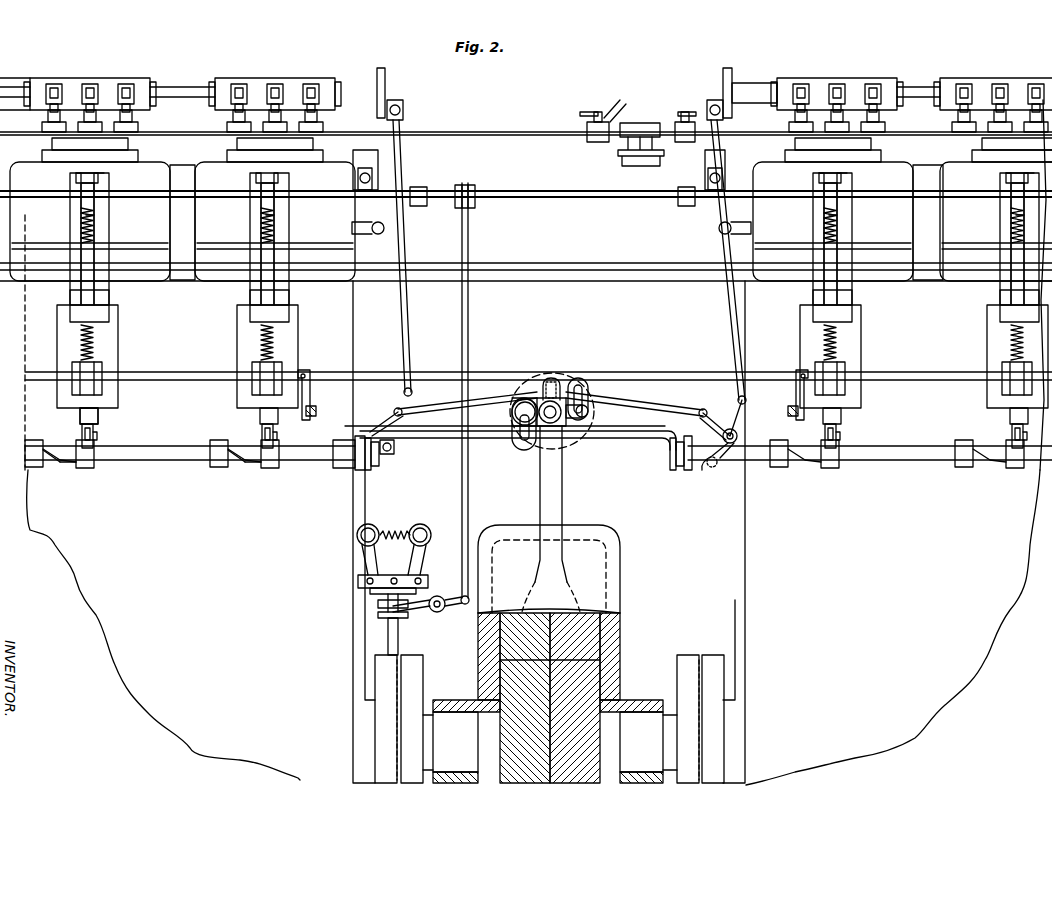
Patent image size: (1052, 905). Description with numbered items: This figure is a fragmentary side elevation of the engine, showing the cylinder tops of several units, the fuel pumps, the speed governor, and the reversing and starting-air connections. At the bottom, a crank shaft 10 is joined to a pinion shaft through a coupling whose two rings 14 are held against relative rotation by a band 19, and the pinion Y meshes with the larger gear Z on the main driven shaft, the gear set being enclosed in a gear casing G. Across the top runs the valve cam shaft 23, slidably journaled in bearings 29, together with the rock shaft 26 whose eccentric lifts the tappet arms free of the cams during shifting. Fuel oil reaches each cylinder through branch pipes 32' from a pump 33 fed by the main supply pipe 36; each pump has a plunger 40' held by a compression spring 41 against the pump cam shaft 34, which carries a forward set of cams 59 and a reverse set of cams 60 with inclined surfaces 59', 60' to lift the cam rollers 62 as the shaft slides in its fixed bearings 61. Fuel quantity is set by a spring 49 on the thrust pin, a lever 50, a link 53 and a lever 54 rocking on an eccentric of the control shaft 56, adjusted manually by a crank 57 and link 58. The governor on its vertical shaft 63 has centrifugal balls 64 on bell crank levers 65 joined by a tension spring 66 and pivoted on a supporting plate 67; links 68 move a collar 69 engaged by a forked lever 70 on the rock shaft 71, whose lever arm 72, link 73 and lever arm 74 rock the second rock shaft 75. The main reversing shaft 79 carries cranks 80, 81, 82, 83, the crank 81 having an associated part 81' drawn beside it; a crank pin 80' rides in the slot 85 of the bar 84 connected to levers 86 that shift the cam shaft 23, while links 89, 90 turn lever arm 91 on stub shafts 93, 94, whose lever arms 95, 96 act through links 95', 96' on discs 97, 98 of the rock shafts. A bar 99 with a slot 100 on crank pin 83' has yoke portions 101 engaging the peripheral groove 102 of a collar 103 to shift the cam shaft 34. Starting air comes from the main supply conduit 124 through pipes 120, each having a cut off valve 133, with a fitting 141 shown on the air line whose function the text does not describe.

The crank shaft 10 is at (368, 728).
The rings 14 is at (390, 682).
The band 19 is at (396, 746).
The cam shaft 23 is at (182, 168).
The rock shaft 26 is at (178, 88).
The bearings 29 is at (356, 178).
The branch pipes 32' is at (537, 239).
The pump 33 is at (108, 300).
The cam shaft 34 is at (166, 462).
The main supply pipe 36 is at (218, 272).
The plunger 40' is at (107, 419).
The compression spring 41 is at (97, 343).
The spring 49 is at (97, 230).
The lever 50 is at (555, 170).
The link 53 is at (99, 225).
The lever 54 is at (94, 372).
The control shaft 56 is at (171, 382).
The crank 57 is at (309, 392).
The link 58 is at (317, 411).
The forward set of cams 59 is at (533, 472).
The inclined surfaces 59' is at (161, 458).
The reverse set of cams 60 is at (499, 458).
The inclined surfaces 60' is at (141, 448).
The fixed bearings 61 is at (336, 466).
The cam rollers 62 is at (93, 435).
The shaft 63 is at (388, 636).
The centrifugal balls 64 is at (357, 535).
The bell crank levers 65 is at (364, 560).
The tension spring 66 is at (395, 530).
The supporting plate 67 is at (378, 592).
The links 68 is at (385, 603).
The collar 69 is at (400, 620).
The forked lever 70 is at (425, 613).
The rock shaft 71 is at (442, 610).
The lever arm 72 is at (458, 597).
The link 73 is at (469, 328).
The lever arm 74 is at (474, 188).
The rock shaft 75 is at (534, 199).
The main reversing shaft 79 is at (558, 424).
The crank 80 is at (568, 417).
The crank pin 80' is at (596, 414).
The crank 81 is at (562, 376).
The inner loop 81' is at (549, 375).
The crank 82 is at (544, 430).
The crank 83 is at (518, 394).
The crank pin 83' is at (509, 412).
The bar 84 is at (640, 393).
The slot 85 is at (585, 384).
The lever 86 is at (404, 352).
The link 89 is at (641, 440).
The link 90 is at (433, 402).
The lever arm 91 is at (385, 414).
The stub shaft 93 is at (740, 434).
The stub shaft 94 is at (357, 438).
The lever arm 95 is at (721, 464).
The link 95' is at (705, 275).
The lever arm 96 is at (395, 459).
The link 96' is at (396, 232).
The disc 97 is at (732, 74).
The disc 98 is at (386, 76).
The bar 99 is at (450, 440).
The slot 100 is at (516, 445).
The yoke portion 101 is at (368, 472).
The peripheral groove 102 is at (378, 468).
The collar 103 is at (356, 472).
The pipes 120 is at (460, 130).
The main supply conduit 124 is at (615, 118).
The cut off valve 133 is at (686, 118).
The cup 141 is at (655, 143).
The gear casing G is at (625, 580).
The pinion Y is at (612, 672).
The gear Z is at (568, 618).